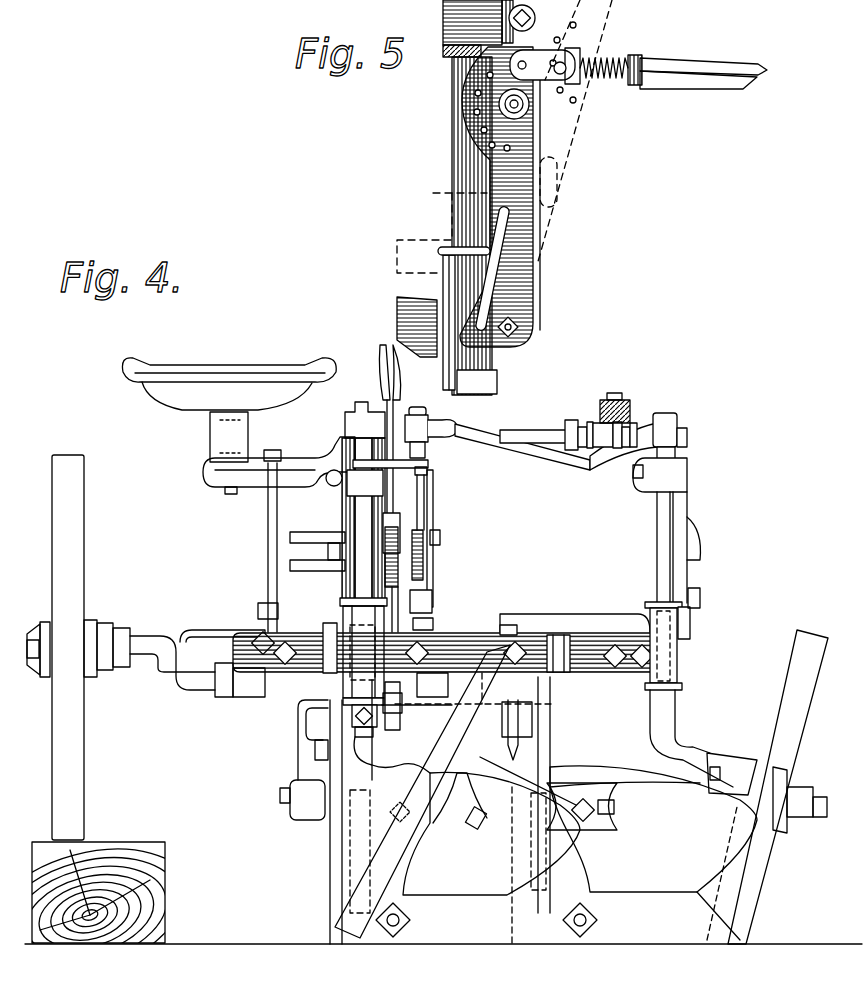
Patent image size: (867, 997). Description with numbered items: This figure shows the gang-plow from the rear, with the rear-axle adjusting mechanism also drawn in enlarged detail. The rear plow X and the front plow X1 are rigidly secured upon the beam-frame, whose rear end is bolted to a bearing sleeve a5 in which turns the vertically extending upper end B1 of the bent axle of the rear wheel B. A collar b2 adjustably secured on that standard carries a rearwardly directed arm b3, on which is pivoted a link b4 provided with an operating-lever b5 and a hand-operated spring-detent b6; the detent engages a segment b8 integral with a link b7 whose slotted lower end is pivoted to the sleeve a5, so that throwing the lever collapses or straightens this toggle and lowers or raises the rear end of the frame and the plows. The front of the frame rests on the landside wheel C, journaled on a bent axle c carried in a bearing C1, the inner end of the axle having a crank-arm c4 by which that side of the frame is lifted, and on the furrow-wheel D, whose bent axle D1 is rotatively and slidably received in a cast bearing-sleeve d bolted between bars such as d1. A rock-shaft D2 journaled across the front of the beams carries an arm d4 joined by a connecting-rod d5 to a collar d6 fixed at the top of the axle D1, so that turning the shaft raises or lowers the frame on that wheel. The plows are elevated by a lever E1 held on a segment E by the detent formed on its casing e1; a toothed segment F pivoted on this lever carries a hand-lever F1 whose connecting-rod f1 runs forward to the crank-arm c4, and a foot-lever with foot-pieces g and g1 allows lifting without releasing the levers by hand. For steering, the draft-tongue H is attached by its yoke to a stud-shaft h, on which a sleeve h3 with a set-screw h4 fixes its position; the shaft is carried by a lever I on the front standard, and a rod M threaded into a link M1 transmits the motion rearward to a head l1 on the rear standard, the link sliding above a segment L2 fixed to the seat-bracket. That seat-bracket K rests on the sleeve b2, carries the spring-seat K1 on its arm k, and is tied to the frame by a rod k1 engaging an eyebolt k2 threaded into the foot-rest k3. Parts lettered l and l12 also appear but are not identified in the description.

In FIG. 5, the upper end of rear axle B1 is at (470, 157).
In FIG. 4, the upper end of rear axle B1 is at (360, 583).
In FIG. 5, the segment b8 is at (462, 104).
In FIG. 5, the link b4 is at (518, 80).
In FIG. 5, the link b7 is at (540, 187).
In FIG. 5, the hand operating spring-detent b6 is at (655, 70).
In FIG. 5, the operating-lever b5 is at (688, 65).
In FIG. 5, the bearing sleeve a5 is at (460, 278).
In FIG. 4, the bearing sleeve a5 is at (362, 644).
In FIG. 4, the landside wheel C is at (72, 553).
In FIG. 4, the bent axle c is at (145, 645).
In FIG. 4, the bearing C1 is at (265, 692).
In FIG. 4, the spring-seat K1 is at (247, 372).
In FIG. 4, the seat-bracket K is at (373, 450).
In FIG. 4, the laterally-extending arm k is at (248, 482).
In FIG. 4, the foot-piece g is at (300, 540).
In FIG. 4, the foot-piece g1 is at (317, 571).
In FIG. 4, the rod k1 is at (272, 578).
In FIG. 4, the eyebolt k2 is at (258, 638).
In FIG. 4, the foot-rest k3 is at (197, 632).
In FIG. 4, the rear wheel B is at (462, 693).
In FIG. 4, the rock-shaft D2 is at (514, 624).
In FIG. 4, the laterally-directed bar d1 is at (575, 632).
In FIG. 4, the rearwardly-directed arm b3 is at (330, 483).
In FIG. 4, the collar b2 is at (360, 485).
In FIG. 4, the lever E1 is at (380, 352).
In FIG. 4, the cap l12 is at (400, 406).
In FIG. 4, the head l1 is at (432, 443).
In FIG. 4, the link M1 is at (458, 416).
In FIG. 4, the segment L2 is at (428, 467).
In FIG. 4, the casing e1 is at (396, 518).
In FIG. 4, the segment E is at (400, 530).
In FIG. 4, the hand-lever F1 is at (430, 537).
In FIG. 4, the connecting-rod f1 is at (445, 545).
In FIG. 4, the toothed segment F is at (437, 575).
In FIG. 4, the crank-arm c4 is at (443, 617).
In FIG. 4, the rod M is at (548, 456).
In FIG. 4, the lever I is at (600, 466).
In FIG. 4, the stud-shaft h is at (520, 434).
In FIG. 4, the sleeve h3 is at (590, 432).
In FIG. 4, the set-screw h4 is at (594, 410).
In FIG. 4, the draft-tongue H is at (628, 415).
In FIG. 4, the collar d6 is at (687, 436).
In FIG. 4, the connecting-rod d5 is at (677, 484).
In FIG. 4, the bent axle D1 is at (668, 546).
In FIG. 4, the bearing-sleeve d is at (668, 671).
In FIG. 4, the arm d4 is at (690, 635).
In FIG. 4, the front wheel D is at (800, 668).
In FIG. 4, the hanger bracket l is at (360, 722).
In FIG. 4, the plow X is at (365, 830).
In FIG. 4, the front plow X1 is at (548, 758).